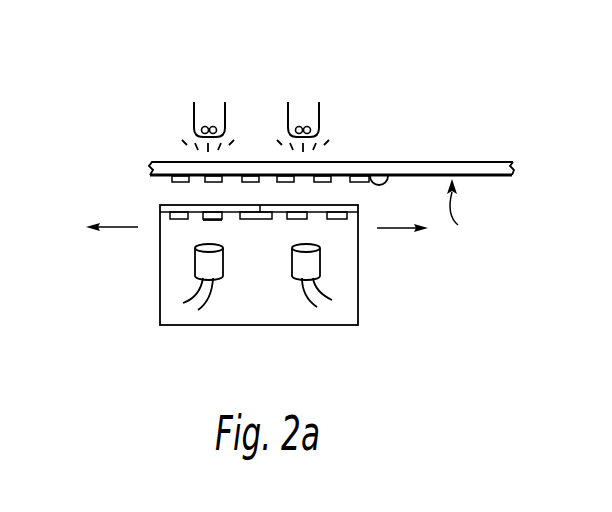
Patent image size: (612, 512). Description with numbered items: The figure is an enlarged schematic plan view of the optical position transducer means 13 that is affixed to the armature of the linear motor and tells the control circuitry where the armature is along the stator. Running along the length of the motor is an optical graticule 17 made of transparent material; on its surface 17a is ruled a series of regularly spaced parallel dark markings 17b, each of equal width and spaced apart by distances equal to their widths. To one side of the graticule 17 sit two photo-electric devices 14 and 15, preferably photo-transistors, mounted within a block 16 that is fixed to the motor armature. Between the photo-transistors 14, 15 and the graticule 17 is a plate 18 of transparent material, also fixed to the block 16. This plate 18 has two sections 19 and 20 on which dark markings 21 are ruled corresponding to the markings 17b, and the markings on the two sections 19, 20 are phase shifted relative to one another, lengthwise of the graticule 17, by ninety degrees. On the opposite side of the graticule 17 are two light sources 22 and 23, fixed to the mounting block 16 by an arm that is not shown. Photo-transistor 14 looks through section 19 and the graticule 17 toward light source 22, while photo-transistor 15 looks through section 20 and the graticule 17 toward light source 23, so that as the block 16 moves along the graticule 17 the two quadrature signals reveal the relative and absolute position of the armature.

The position sensing transducer means 13 is at (128, 190).
The photo-electric device 14 is at (196, 258).
The photo-electric device 15 is at (319, 258).
The block 16 is at (338, 317).
The optical graticule 17 is at (447, 166).
The surface of the graticule 17a is at (470, 208).
The dark markings 17b is at (391, 178).
The plate 18 is at (170, 209).
The section of the plate 19 is at (215, 211).
The section of the plate 20 is at (331, 211).
The dark markings 21 is at (212, 220).
The light source 22 is at (207, 100).
The light source 23 is at (302, 100).